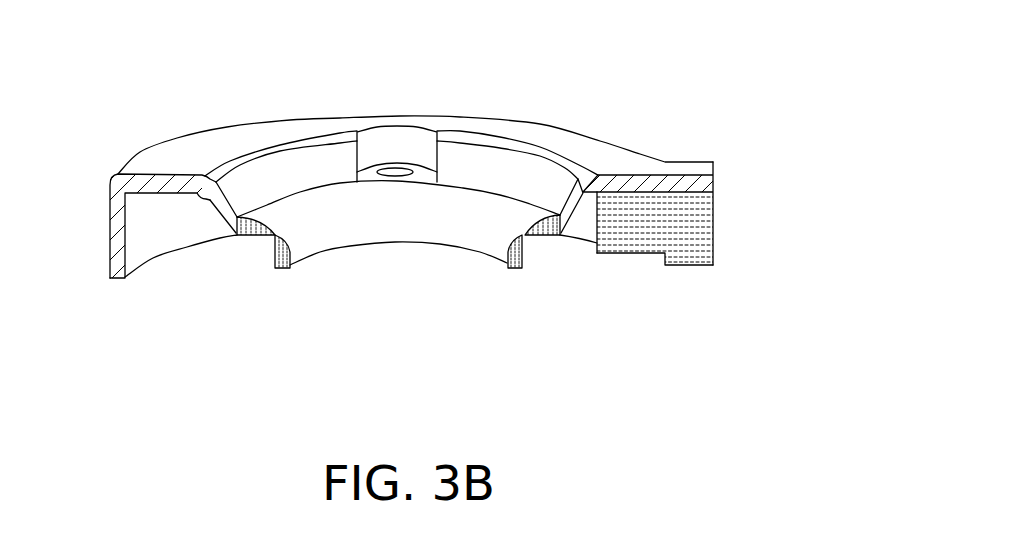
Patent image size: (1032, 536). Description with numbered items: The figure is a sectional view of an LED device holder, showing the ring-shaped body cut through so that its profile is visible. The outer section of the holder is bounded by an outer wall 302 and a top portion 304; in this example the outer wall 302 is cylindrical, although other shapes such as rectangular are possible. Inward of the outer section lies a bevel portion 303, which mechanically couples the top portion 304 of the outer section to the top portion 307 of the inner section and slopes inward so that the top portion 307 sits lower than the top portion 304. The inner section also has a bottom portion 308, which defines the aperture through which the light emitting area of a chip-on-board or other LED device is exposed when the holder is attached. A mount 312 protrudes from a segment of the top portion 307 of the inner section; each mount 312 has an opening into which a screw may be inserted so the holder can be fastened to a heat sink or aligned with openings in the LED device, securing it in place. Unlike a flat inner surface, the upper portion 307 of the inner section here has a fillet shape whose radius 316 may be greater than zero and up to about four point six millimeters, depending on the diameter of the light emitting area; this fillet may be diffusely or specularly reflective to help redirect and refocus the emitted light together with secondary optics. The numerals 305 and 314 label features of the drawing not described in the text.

The outer wall 302 is at (718, 203).
The bevel portion 303 is at (492, 163).
The top portion 304 is at (622, 148).
The lower step 305 is at (713, 263).
The top portion 307 is at (277, 185).
The bottom portion 308 is at (267, 265).
The mount 312 is at (403, 140).
The inner hub 314 is at (423, 213).
The radius 316 is at (545, 236).